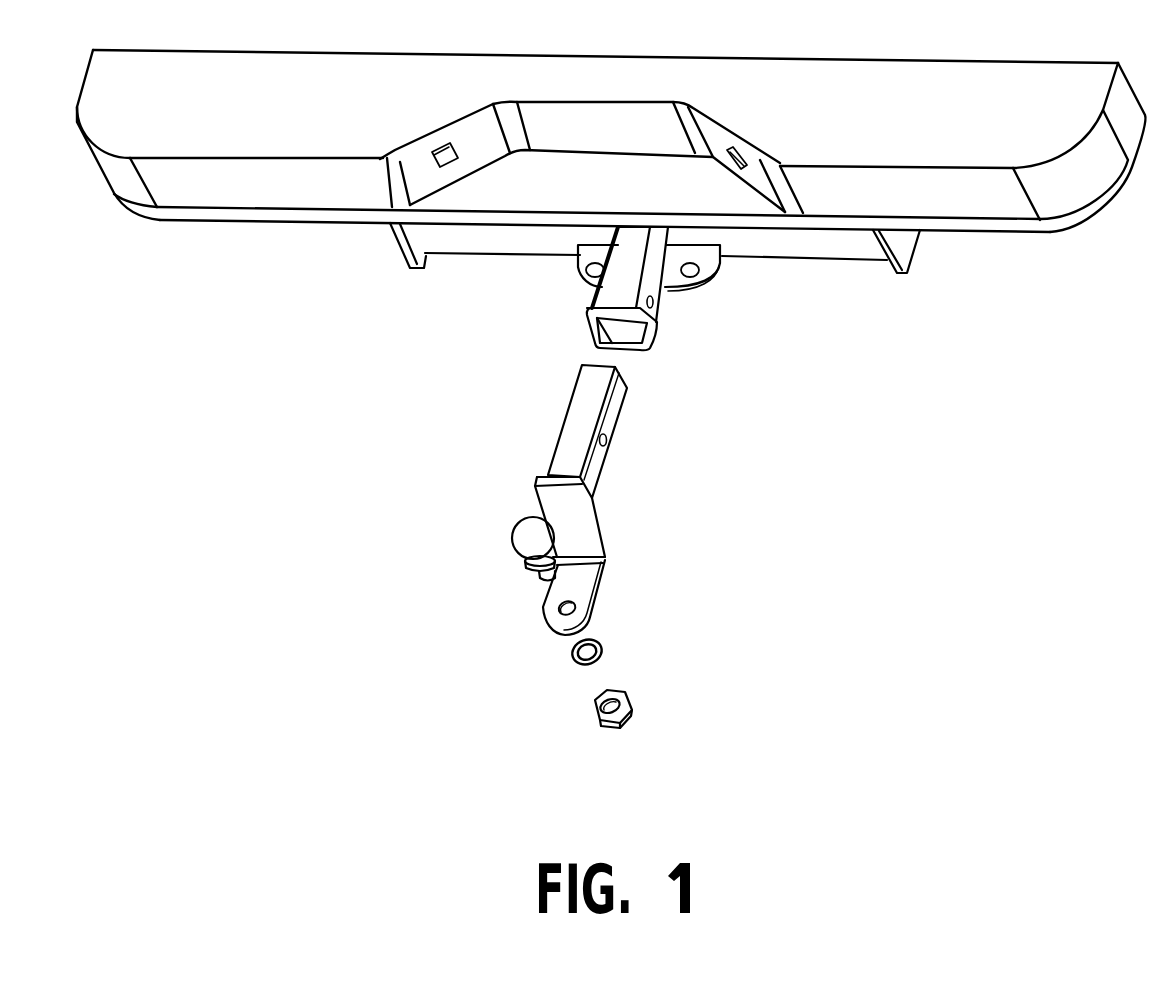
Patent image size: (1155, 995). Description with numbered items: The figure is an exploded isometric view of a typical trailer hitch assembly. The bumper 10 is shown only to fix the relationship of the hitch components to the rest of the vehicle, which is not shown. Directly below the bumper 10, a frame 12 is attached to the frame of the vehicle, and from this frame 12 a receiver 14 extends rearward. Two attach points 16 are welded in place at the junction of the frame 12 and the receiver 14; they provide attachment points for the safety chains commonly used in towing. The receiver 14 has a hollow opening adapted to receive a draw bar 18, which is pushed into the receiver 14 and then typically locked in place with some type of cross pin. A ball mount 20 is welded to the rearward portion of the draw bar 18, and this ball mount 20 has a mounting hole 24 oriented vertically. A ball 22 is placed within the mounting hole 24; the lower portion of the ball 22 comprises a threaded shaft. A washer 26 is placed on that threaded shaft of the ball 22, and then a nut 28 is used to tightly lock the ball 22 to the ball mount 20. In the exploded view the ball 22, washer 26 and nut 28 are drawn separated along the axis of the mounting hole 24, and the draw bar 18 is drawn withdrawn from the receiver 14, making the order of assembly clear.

The bumper 10 is at (1013, 220).
The frame 12 is at (833, 262).
The receiver 14 is at (668, 317).
The attach points 16 is at (585, 280).
The draw bar 18 is at (612, 460).
The ball mount 20 is at (608, 588).
The ball 22 is at (523, 561).
The mounting hole 24 is at (557, 618).
The washer 26 is at (578, 665).
The nut 28 is at (632, 714).